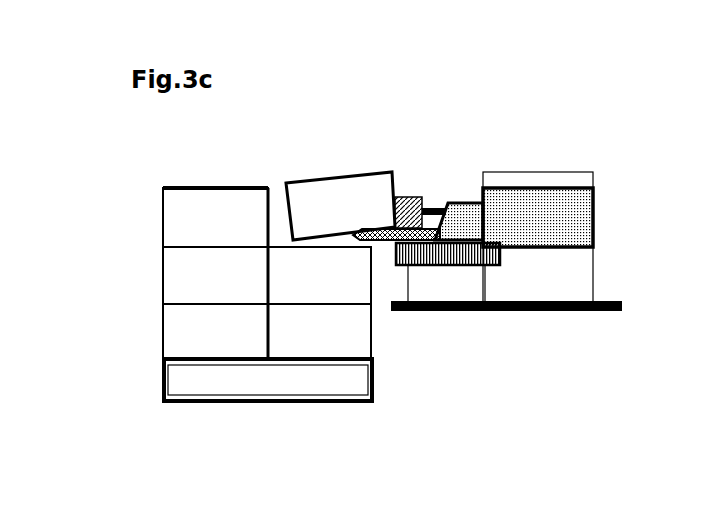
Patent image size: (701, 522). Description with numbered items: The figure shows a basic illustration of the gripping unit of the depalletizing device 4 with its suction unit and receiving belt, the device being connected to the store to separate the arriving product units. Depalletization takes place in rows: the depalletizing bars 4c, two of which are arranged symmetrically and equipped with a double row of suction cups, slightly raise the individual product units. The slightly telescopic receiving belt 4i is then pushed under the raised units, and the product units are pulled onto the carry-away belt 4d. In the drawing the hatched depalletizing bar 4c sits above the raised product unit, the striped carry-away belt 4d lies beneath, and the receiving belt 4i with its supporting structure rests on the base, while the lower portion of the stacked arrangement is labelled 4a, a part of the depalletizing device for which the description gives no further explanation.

The depalletizing device 4 is at (572, 222).
The gripper base 4a is at (207, 382).
The depalletizing bars 4c is at (410, 200).
The carry-away belt 4d is at (505, 255).
The receiving belt 4i is at (408, 267).